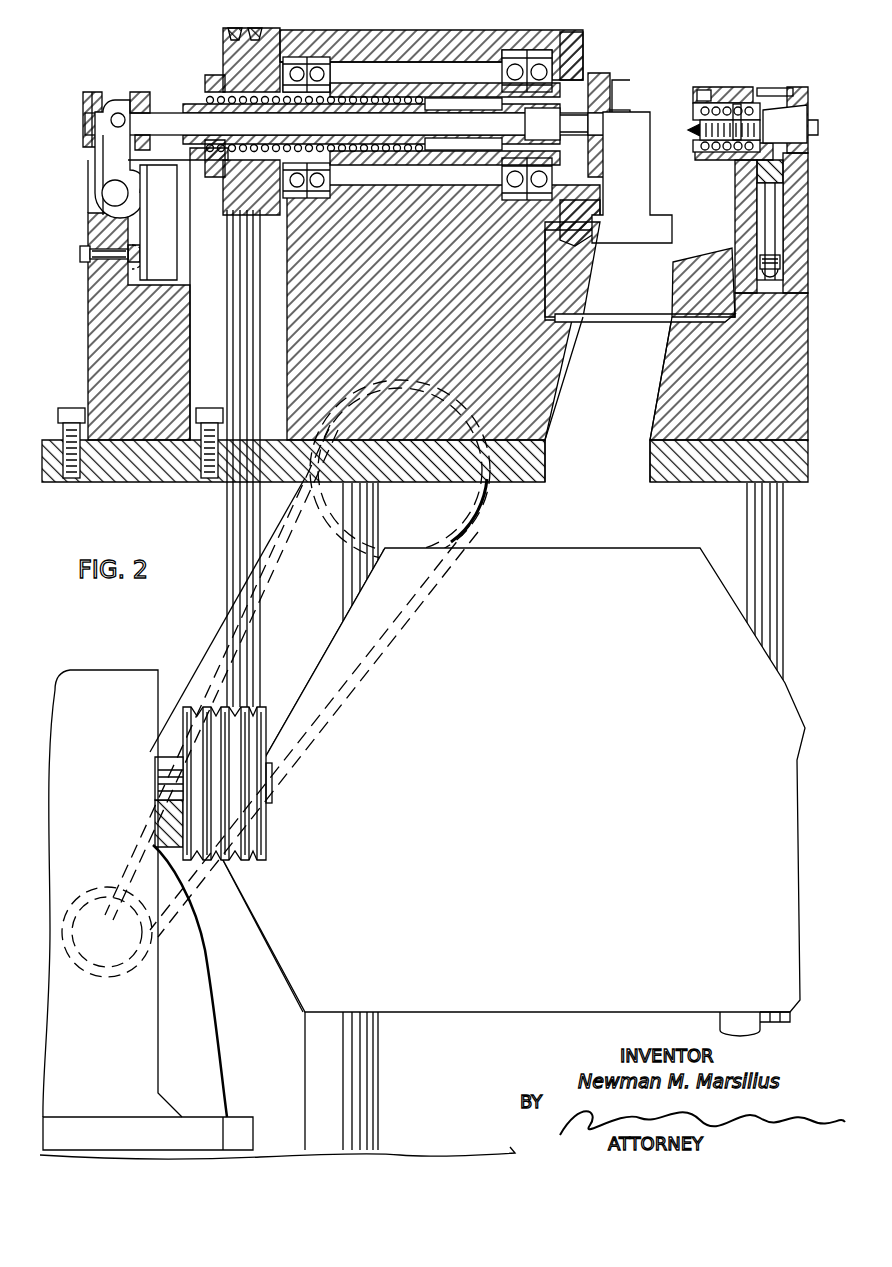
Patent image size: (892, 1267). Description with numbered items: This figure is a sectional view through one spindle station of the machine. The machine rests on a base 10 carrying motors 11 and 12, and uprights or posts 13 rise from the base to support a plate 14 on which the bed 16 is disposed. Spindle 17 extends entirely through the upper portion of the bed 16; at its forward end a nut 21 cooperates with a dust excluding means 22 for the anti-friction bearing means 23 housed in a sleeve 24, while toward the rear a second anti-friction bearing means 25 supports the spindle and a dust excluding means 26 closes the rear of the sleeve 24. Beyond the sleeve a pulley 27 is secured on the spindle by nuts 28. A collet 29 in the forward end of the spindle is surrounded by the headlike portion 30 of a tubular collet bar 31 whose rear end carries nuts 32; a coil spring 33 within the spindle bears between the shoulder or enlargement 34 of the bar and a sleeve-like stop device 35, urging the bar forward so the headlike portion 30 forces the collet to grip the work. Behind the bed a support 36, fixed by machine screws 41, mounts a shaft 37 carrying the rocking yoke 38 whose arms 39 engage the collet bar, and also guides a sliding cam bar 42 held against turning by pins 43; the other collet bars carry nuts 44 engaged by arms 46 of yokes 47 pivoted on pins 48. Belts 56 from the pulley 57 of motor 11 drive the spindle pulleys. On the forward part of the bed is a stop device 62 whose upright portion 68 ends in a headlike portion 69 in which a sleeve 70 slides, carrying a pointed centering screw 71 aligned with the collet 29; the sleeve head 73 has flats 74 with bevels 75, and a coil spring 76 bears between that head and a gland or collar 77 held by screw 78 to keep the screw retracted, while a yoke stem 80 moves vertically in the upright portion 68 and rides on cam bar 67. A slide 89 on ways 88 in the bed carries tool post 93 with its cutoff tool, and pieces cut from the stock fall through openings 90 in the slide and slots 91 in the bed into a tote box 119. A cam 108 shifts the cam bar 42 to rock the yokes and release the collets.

The base 10 is at (445, 1143).
The motor 11 is at (110, 690).
The motor 12 is at (185, 962).
The uprights or posts 13 is at (330, 567).
The plate 14 is at (162, 480).
The bed 16 is at (525, 377).
The spindle 17 is at (472, 110).
The nut 21 is at (606, 90).
The dust excluding means 22 is at (578, 56).
The anti-friction bearing means 23 is at (545, 55).
The sleeve 24 is at (440, 88).
The anti-friction bearing means 25 is at (330, 48).
The dust excluding means 26 is at (305, 57).
The pulley 27 is at (226, 58).
The nuts 28 is at (208, 78).
The collet 29 is at (620, 112).
The headlike portion 30 is at (582, 175).
The tubular collet bar 31 is at (183, 108).
The nuts 32 is at (140, 94).
The coil spring 33 is at (382, 98).
The shoulder or enlargement 34 is at (432, 150).
The sleeve-like stop device 35 is at (202, 162).
The support 36 is at (110, 324).
The shaft or bar 37 is at (170, 195).
The collet bar operating means or yoke 38 is at (162, 228).
The arms 39 is at (165, 148).
The machine screws 41 is at (74, 480).
The cam bar 42 is at (125, 256).
The pins 43 is at (82, 250).
The nuts 44 is at (92, 150).
The arms 46 is at (122, 110).
The collet bar operating means or yokes 47 is at (95, 175).
The pins 48 is at (110, 196).
The belts 56 is at (240, 667).
The pulley 57 is at (272, 820).
The stop device 62 is at (774, 82).
The cam bar 67 is at (772, 276).
The upright portion 68 is at (748, 208).
The headlike portion 69 is at (732, 88).
The sleeve 70 is at (695, 112).
The screw 71 is at (700, 132).
The headlike portion 73 is at (780, 88).
The flats 74 is at (800, 100).
The bevel 75 is at (790, 110).
The coil spring 76 is at (741, 104).
The gland or collar 77 is at (712, 160).
The screw 78 is at (700, 90).
The stem 80 is at (768, 232).
The ways 88 is at (588, 320).
The slide 89 is at (665, 305).
The openings or slots 90 is at (628, 300).
The slots 91 is at (614, 420).
The tool post 93 is at (632, 196).
The cam 108 is at (108, 935).
The receptacle or tote box 119 is at (510, 849).